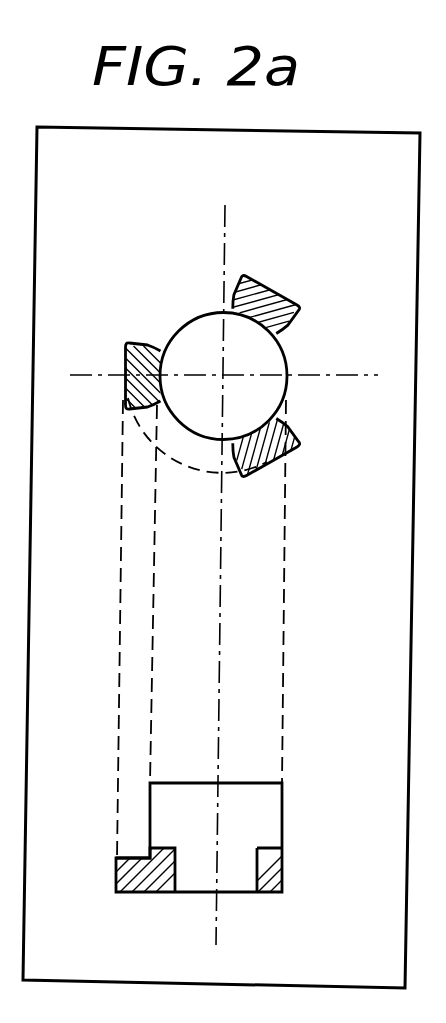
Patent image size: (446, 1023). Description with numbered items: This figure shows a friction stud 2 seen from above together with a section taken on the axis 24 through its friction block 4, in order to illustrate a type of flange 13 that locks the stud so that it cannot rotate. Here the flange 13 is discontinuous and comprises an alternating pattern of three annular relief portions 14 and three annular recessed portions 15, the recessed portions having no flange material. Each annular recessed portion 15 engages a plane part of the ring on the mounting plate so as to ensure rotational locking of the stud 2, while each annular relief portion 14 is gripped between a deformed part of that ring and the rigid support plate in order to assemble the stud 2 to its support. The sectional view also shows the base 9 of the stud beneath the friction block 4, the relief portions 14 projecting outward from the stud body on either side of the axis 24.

The friction stud 2 is at (292, 353).
The friction block 4 is at (277, 392).
The base 9 is at (262, 299).
The flange 13 is at (252, 455).
The annular relief portion 14 is at (128, 393).
The annular recessed portion 15 is at (188, 455).
The axis 24 is at (217, 937).